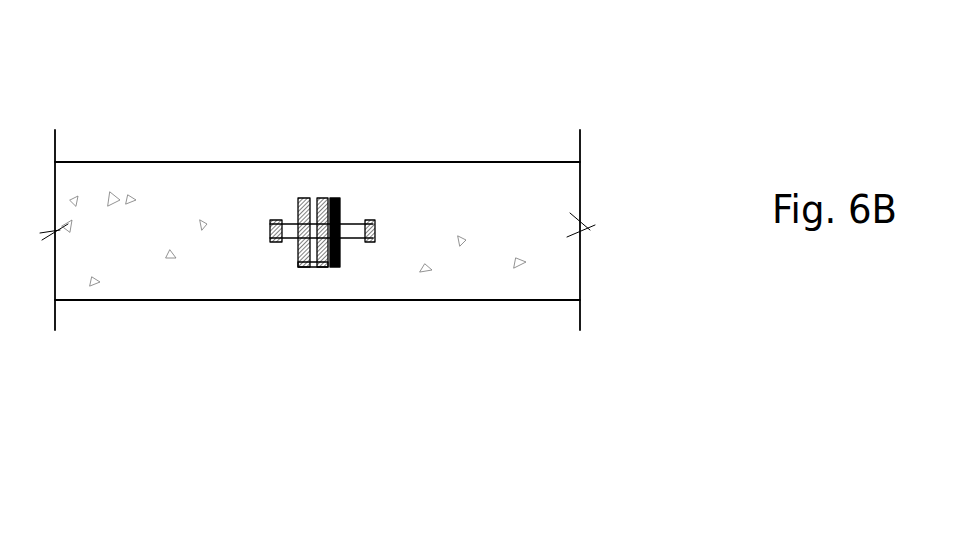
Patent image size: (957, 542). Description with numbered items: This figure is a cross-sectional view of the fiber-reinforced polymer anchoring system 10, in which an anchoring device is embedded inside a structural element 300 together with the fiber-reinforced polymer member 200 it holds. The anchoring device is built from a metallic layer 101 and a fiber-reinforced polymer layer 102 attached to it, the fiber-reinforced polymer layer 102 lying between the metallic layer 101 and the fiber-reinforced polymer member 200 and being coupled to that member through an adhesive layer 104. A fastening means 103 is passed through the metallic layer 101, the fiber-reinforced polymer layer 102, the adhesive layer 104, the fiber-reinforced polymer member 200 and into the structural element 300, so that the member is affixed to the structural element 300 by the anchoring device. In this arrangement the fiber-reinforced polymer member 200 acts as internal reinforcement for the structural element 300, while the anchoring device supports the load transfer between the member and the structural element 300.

The fiber-reinforced polymer anchoring system 10 is at (655, 72).
The metallic layer 101 is at (303, 197).
The fiber-reinforced polymer layer 102 is at (298, 202).
The fastening means 103 is at (267, 221).
The adhesive layer 104 is at (302, 265).
The fiber-reinforced polymer member 200 is at (333, 199).
The structural element 300 is at (535, 210).